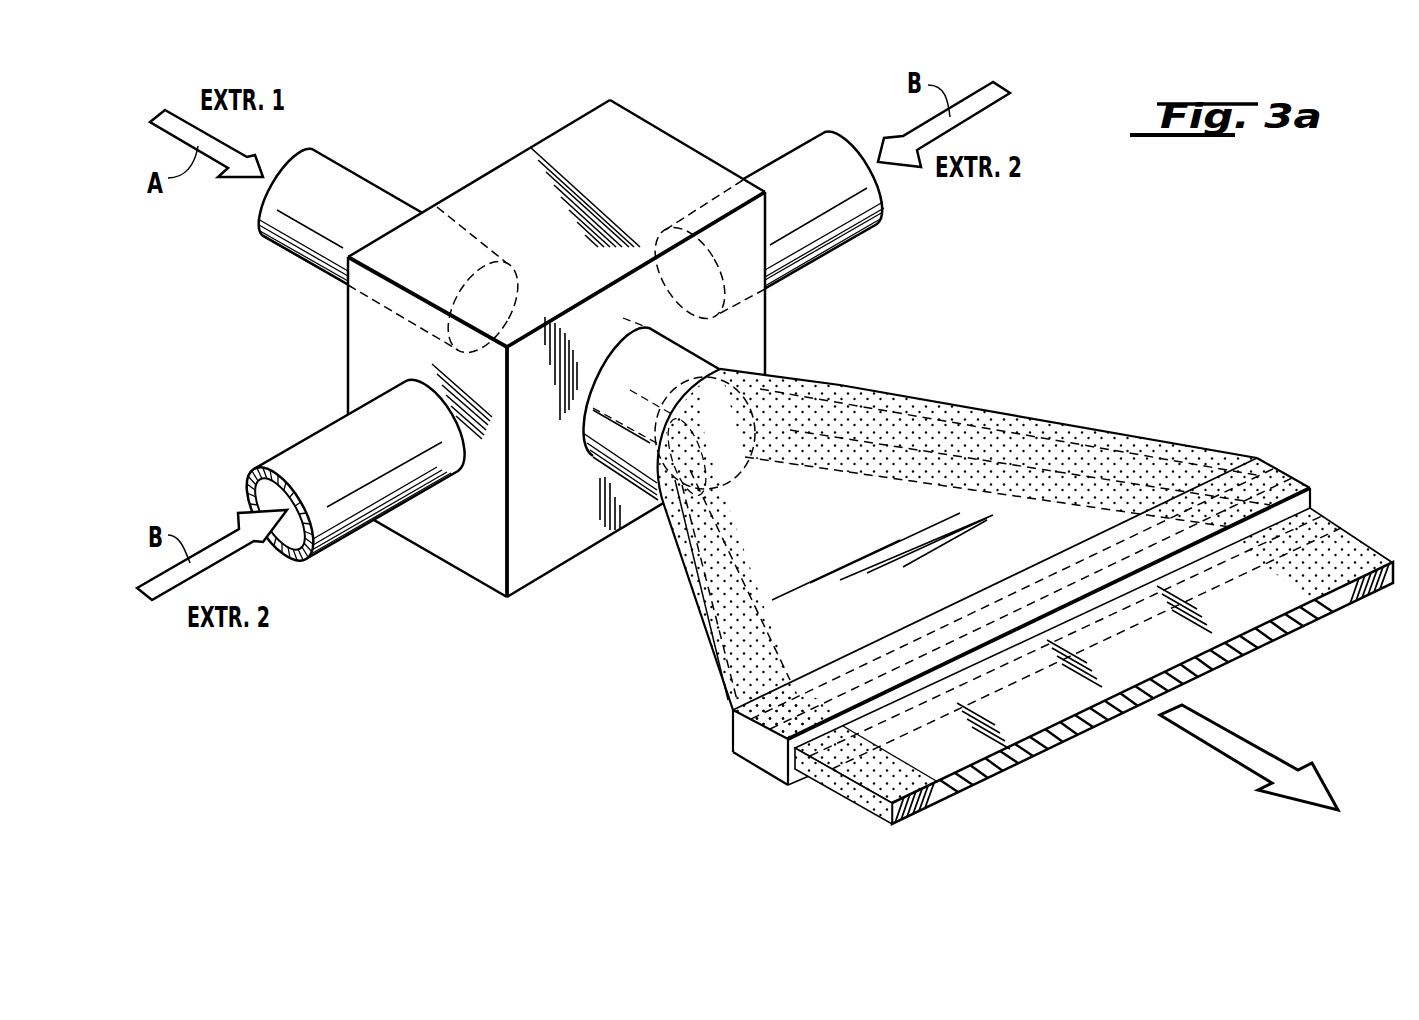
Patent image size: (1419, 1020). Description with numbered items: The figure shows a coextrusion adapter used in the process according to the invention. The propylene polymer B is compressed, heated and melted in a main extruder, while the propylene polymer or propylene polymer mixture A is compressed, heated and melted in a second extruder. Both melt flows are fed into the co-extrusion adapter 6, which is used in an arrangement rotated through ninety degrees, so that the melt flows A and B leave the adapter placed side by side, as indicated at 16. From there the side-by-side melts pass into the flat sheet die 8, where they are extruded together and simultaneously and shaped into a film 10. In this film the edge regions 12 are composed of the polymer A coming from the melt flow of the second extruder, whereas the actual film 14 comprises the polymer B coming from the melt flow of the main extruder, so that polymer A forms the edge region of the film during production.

The co-extrusion adapter 6 is at (581, 576).
The flat sheet die 8 is at (1073, 432).
The film 10 is at (1354, 523).
The edge regions 12 is at (864, 807).
The actual film 14 is at (1055, 752).
The side-by-side placement of melt flows 16 is at (745, 375).